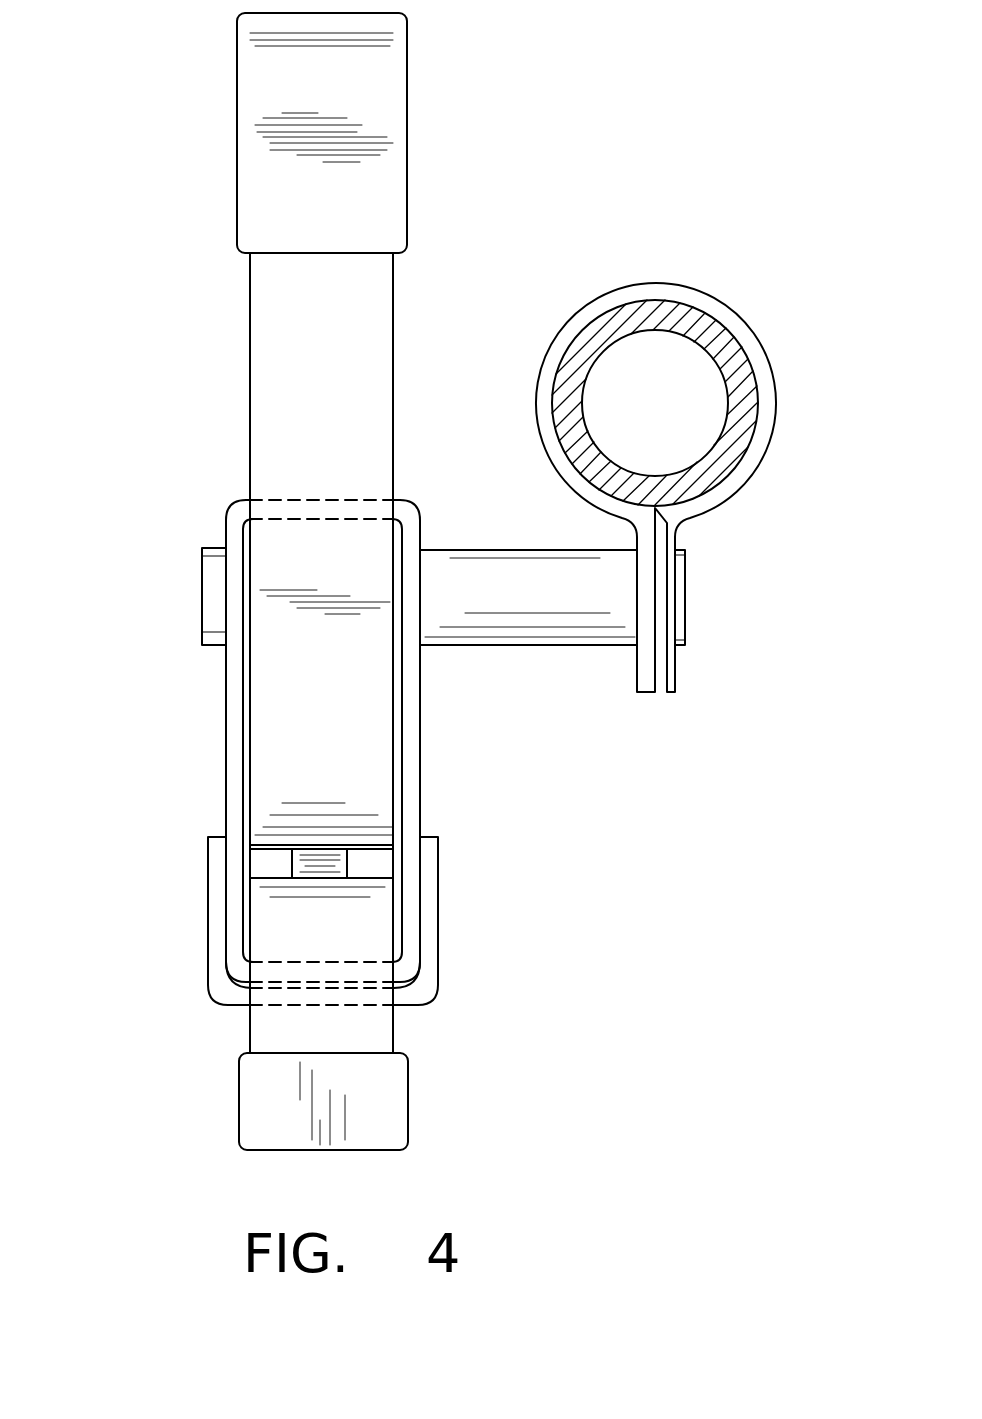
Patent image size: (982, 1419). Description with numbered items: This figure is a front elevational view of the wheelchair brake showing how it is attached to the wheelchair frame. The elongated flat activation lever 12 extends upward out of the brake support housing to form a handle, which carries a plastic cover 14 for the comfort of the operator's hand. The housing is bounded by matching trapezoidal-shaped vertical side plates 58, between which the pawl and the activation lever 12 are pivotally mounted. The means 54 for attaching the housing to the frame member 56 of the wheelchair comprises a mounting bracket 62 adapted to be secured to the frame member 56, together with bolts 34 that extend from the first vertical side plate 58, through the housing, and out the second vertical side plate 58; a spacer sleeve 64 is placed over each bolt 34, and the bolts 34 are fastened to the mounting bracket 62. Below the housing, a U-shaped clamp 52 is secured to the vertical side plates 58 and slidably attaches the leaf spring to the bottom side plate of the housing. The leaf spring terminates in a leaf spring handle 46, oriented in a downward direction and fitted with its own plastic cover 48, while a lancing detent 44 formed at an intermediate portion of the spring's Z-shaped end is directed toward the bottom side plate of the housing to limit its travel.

The plastic cover 14 is at (407, 55).
The activation lever 12 is at (250, 351).
The mounting bracket 62 is at (637, 282).
The frame member 56 is at (685, 323).
The means for attaching the housing 54 is at (533, 548).
The bolt 34 is at (202, 583).
The spacer sleeve 64 is at (453, 647).
The trapezoidal-shaped vertical side plate 58 is at (226, 803).
The lancing detent 44 is at (312, 867).
The U-shaped clamp 52 is at (440, 882).
The leaf spring handle 46 is at (395, 1025).
The plastic cover 48 is at (408, 1108).